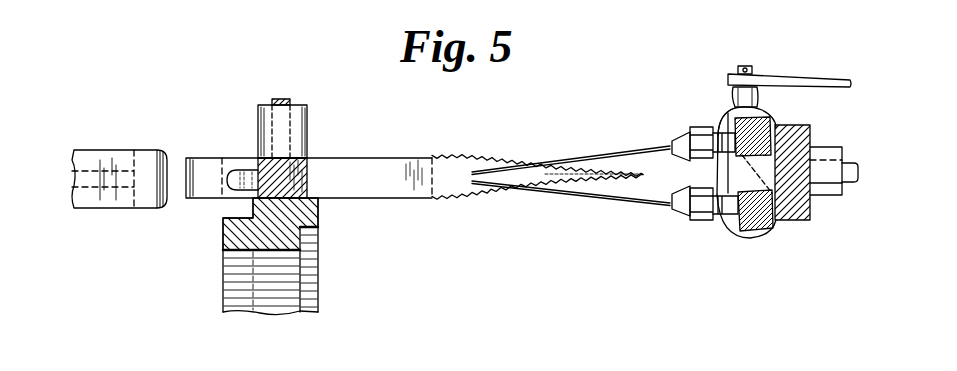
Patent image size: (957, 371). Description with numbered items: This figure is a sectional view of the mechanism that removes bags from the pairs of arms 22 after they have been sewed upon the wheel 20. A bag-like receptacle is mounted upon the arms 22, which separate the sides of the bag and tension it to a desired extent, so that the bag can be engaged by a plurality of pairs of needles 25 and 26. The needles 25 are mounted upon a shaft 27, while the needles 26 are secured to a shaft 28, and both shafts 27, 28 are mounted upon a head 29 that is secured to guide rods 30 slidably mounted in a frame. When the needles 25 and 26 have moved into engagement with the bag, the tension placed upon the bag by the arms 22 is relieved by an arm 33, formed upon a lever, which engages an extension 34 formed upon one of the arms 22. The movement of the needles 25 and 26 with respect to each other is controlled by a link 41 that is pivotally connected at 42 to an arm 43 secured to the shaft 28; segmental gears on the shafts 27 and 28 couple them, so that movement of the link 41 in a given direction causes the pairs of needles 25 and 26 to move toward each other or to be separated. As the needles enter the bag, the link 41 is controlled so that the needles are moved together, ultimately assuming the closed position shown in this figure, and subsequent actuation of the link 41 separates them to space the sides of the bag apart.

The wheel 20 is at (296, 234).
The arms 22 is at (423, 183).
The needles 25 is at (639, 149).
The needles 26 is at (618, 198).
The shaft 27 is at (732, 126).
The shaft 28 is at (742, 232).
The head 29 is at (797, 222).
The guide rods 30 is at (837, 183).
The arm 33 is at (103, 165).
The extension 34 is at (215, 165).
The link 41 is at (807, 80).
The pivot 42 is at (748, 70).
The arm 43 is at (728, 108).